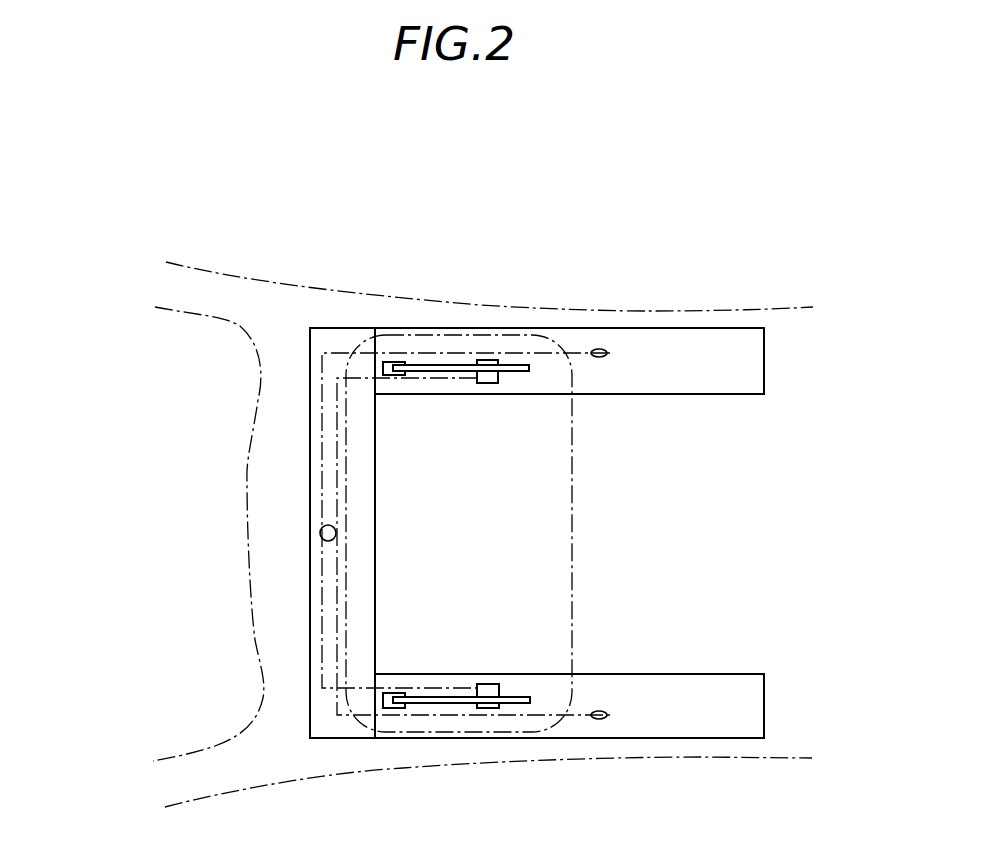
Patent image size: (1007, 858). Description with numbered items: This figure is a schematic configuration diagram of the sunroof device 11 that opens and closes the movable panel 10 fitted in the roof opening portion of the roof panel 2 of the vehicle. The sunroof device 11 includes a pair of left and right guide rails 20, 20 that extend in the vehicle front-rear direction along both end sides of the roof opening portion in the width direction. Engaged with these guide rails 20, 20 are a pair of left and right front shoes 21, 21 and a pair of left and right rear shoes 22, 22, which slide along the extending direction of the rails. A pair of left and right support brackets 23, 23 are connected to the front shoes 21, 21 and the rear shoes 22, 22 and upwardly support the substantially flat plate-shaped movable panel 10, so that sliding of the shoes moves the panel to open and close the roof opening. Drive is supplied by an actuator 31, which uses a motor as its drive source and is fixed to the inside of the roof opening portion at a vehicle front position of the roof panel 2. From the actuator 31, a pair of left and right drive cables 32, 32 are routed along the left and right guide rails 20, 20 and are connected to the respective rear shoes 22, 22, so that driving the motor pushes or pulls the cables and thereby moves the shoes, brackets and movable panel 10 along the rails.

The roof panel 2 is at (252, 283).
The movable panel 10 is at (572, 535).
The sunroof device 11 is at (680, 287).
The guide rail 20 is at (512, 328).
The front shoe 21 is at (393, 376).
The rear shoe 22 is at (488, 383).
The support bracket 23 is at (513, 372).
The actuator 31 is at (331, 526).
The drive cable 32 is at (337, 592).